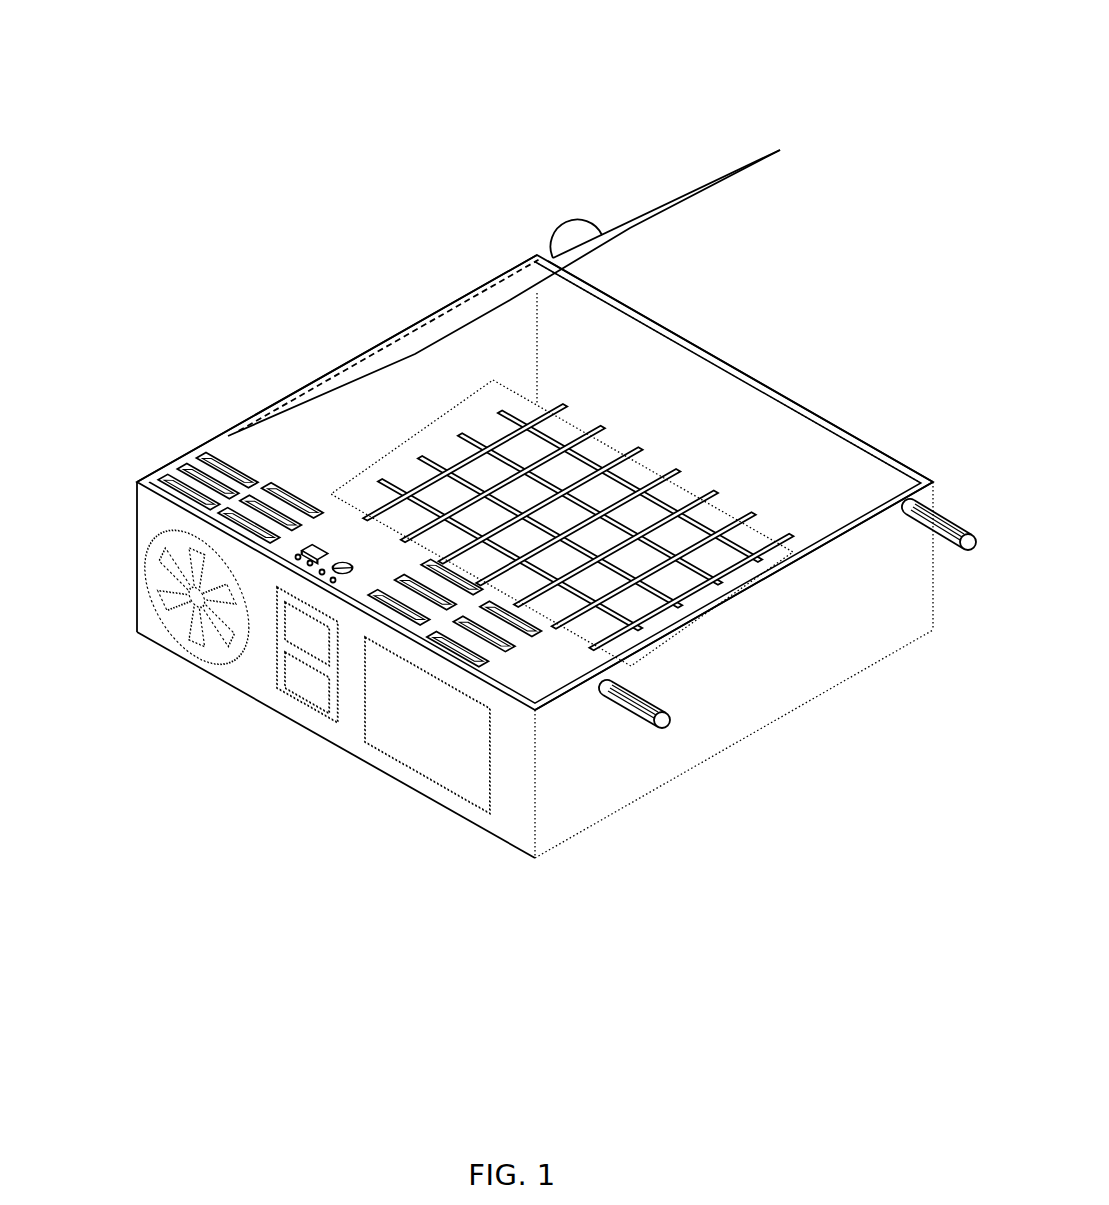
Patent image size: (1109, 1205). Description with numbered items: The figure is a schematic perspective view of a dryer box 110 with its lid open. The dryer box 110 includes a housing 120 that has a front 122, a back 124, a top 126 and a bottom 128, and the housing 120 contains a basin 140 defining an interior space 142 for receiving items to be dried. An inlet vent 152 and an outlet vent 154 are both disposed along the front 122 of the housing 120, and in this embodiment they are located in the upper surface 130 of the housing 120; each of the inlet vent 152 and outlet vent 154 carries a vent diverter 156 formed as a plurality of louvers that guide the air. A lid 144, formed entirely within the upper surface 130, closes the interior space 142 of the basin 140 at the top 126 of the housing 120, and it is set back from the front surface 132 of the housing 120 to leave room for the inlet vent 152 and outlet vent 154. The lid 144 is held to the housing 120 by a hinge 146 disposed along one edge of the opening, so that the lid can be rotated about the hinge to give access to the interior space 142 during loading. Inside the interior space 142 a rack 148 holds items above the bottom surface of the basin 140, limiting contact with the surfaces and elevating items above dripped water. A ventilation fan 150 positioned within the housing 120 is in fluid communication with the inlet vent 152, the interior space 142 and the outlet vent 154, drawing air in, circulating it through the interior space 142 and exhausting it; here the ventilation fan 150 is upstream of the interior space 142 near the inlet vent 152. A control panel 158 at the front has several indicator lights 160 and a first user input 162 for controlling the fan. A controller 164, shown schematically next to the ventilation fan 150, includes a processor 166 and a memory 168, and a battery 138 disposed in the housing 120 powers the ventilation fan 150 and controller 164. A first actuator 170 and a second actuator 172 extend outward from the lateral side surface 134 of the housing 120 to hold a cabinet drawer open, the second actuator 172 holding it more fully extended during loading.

The dryer box 110 is at (307, 165).
The housing 120 is at (857, 440).
The front 122 is at (158, 432).
The back 124 is at (500, 243).
The top 126 is at (802, 580).
The bottom 128 is at (802, 680).
The upper surface 130 is at (573, 643).
The front surface 132 is at (522, 790).
The lateral side surface 134 is at (655, 760).
The battery 138 is at (446, 738).
The basin 140 is at (737, 422).
The interior space 142 is at (688, 405).
The lid 144 is at (633, 232).
The hinge 146 is at (417, 327).
The rack 148 is at (580, 433).
The ventilation fan 150 is at (183, 622).
The inlet vent 152 is at (147, 455).
The outlet vent 154 is at (573, 698).
The vent diverter 156 is at (545, 692).
The control panel 158 is at (347, 547).
The indicator lights 160 is at (300, 557).
The first user input 162 is at (312, 546).
The controller 164 is at (327, 722).
The processor 166 is at (290, 630).
The memory 168 is at (303, 685).
The first actuator 170 is at (640, 697).
The second actuator 172 is at (947, 520).